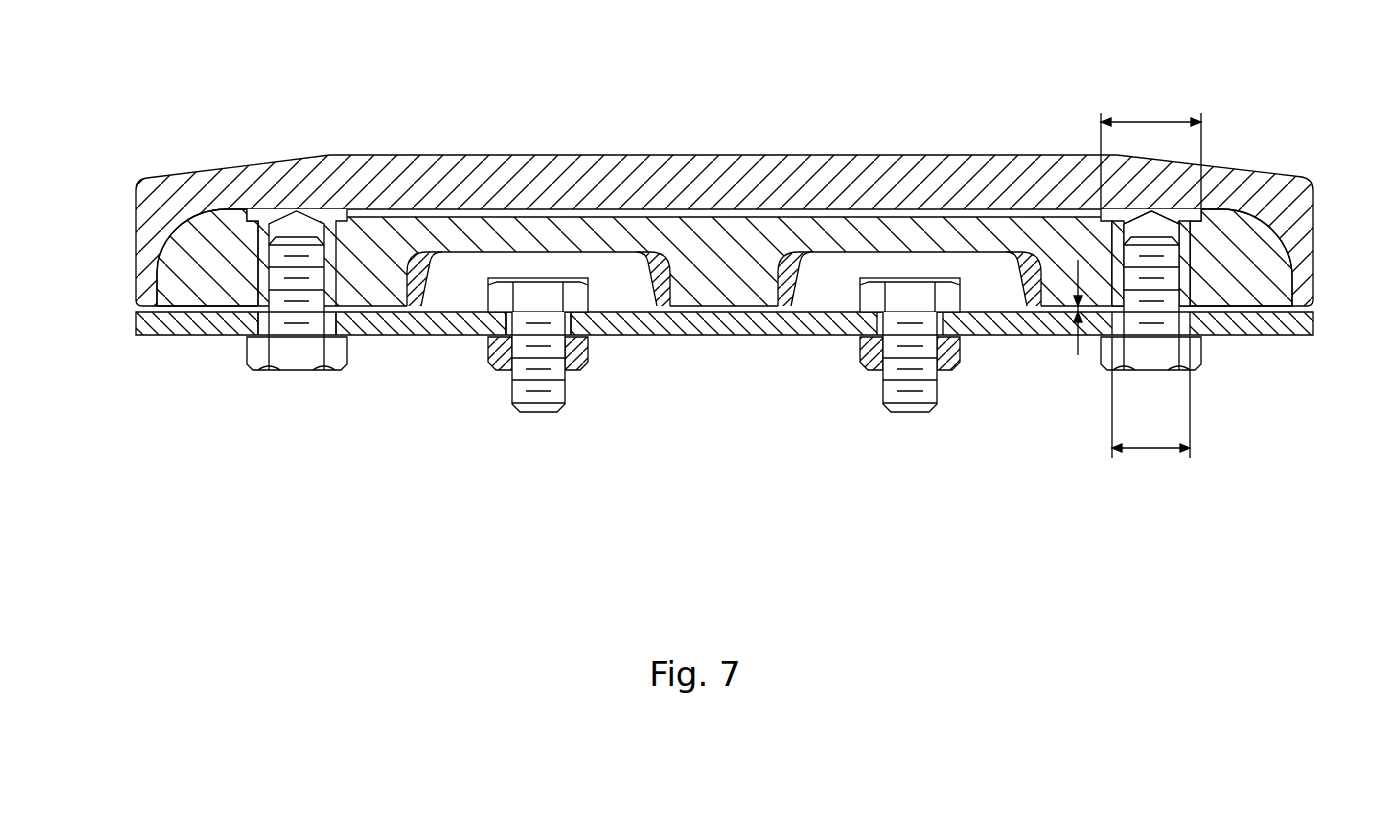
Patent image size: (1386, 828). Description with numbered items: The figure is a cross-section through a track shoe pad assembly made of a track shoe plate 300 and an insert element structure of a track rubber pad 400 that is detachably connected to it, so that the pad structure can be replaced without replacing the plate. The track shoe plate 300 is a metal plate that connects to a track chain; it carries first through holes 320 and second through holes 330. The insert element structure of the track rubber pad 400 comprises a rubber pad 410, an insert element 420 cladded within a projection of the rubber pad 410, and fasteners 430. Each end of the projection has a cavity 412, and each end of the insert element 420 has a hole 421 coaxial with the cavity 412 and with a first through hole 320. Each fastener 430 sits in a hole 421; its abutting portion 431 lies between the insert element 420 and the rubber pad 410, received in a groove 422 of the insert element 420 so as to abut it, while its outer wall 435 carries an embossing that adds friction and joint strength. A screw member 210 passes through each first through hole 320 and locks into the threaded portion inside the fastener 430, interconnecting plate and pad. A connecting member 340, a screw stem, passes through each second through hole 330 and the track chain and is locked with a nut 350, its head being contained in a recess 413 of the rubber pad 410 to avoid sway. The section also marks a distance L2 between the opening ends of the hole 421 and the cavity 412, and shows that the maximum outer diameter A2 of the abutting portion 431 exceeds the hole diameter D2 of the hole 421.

The screw member 210 is at (298, 360).
The track shoe plate 300 is at (143, 323).
The first through hole 320 is at (360, 337).
The second through hole 330 is at (570, 325).
The connecting member 340 is at (540, 405).
The nut 350 is at (503, 365).
The insert element structure of the track rubber pad 400 is at (527, 180).
The rubber pad 410 is at (150, 272).
The cavity 412 is at (1110, 368).
The recess 413 is at (625, 288).
The insert element 420 is at (175, 284).
The hole 421 is at (1187, 340).
The groove 422 is at (1218, 210).
The fastener 430 is at (272, 218).
The abutting portion 431 is at (1123, 215).
The outer wall 435 is at (1110, 264).
The maximum outer diameter A2 is at (1151, 147).
The hole diameter D2 is at (1151, 397).
The distance L2 is at (1067, 324).